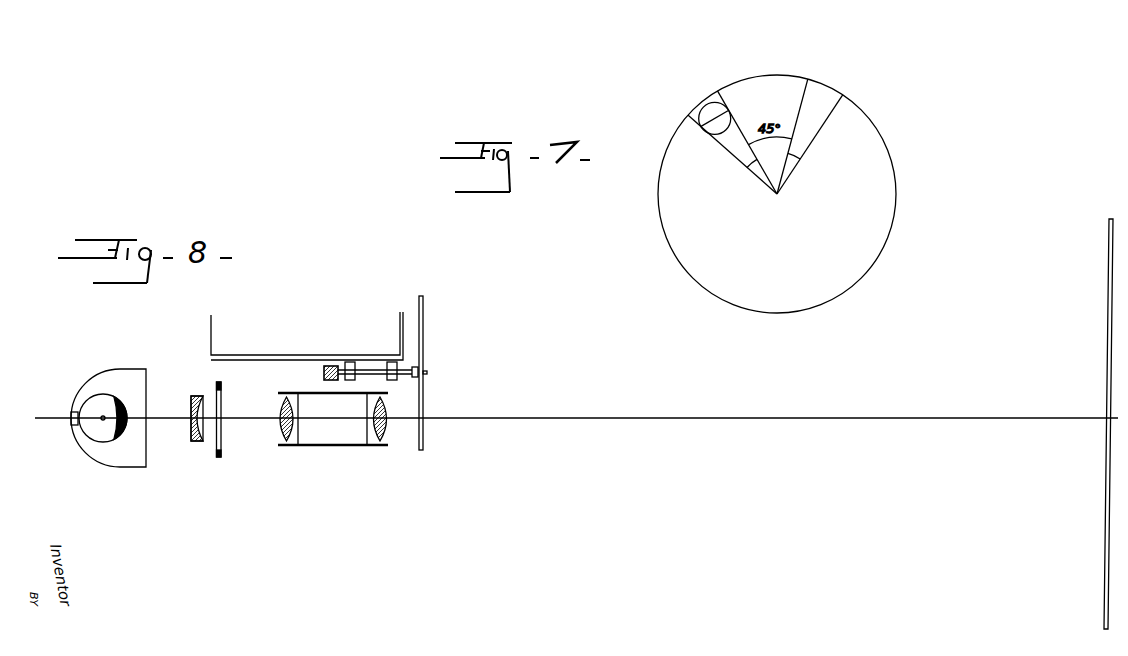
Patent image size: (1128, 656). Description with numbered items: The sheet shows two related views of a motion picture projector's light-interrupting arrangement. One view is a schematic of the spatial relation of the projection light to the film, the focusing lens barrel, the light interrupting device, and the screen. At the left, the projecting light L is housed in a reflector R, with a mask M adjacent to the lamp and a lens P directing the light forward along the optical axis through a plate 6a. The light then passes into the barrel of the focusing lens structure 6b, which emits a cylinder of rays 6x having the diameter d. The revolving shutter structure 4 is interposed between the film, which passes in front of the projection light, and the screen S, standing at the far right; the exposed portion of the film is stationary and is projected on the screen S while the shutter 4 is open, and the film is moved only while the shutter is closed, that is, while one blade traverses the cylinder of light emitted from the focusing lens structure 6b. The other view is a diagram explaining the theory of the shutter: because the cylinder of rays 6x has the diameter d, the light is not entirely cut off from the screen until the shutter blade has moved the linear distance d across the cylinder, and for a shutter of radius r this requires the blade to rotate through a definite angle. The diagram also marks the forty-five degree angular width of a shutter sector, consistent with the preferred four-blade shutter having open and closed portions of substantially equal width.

In FIG. 7, the radius of the shutter r is at (805, 93).
In FIG. 7, the cylinder of rays from the projection lens 6x is at (709, 104).
In FIG. 8, the cylinder of rays from the projection lens 6x is at (387, 437).
In FIG. 7, the diameter of the cylinder of rays d is at (717, 122).
In FIG. 8, the reflector R is at (123, 468).
In FIG. 8, the projecting light L is at (101, 421).
In FIG. 8, the mask M is at (126, 408).
In FIG. 8, the lens P is at (197, 443).
In FIG. 8, the plate 6a is at (221, 455).
In FIG. 8, the focusing lens structure 6b is at (333, 440).
In FIG. 8, the revolving shutter structure 4 is at (422, 405).
In FIG. 8, the screen S is at (1106, 317).